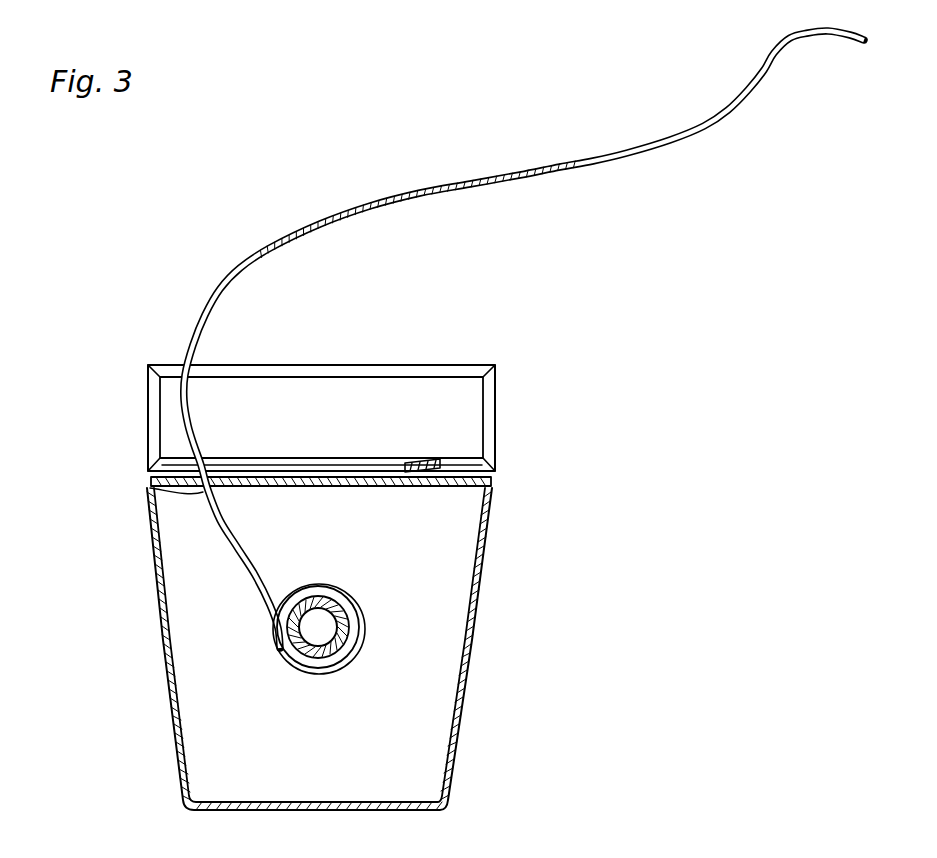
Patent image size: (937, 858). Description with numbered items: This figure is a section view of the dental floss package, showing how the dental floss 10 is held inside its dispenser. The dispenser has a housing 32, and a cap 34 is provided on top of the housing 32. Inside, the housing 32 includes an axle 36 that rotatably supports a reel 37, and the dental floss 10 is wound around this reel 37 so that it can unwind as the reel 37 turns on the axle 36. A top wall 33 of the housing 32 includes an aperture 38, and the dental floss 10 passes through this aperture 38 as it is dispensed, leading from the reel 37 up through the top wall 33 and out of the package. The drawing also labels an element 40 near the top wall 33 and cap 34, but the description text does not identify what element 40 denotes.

The dental floss 10 is at (678, 85).
The housing 32 is at (478, 622).
The top wall 33 is at (320, 487).
The cap 34 is at (495, 400).
The axle 36 is at (347, 597).
The reel 37 is at (357, 628).
The aperture 38 is at (203, 492).
The floss cutter 40 is at (441, 463).